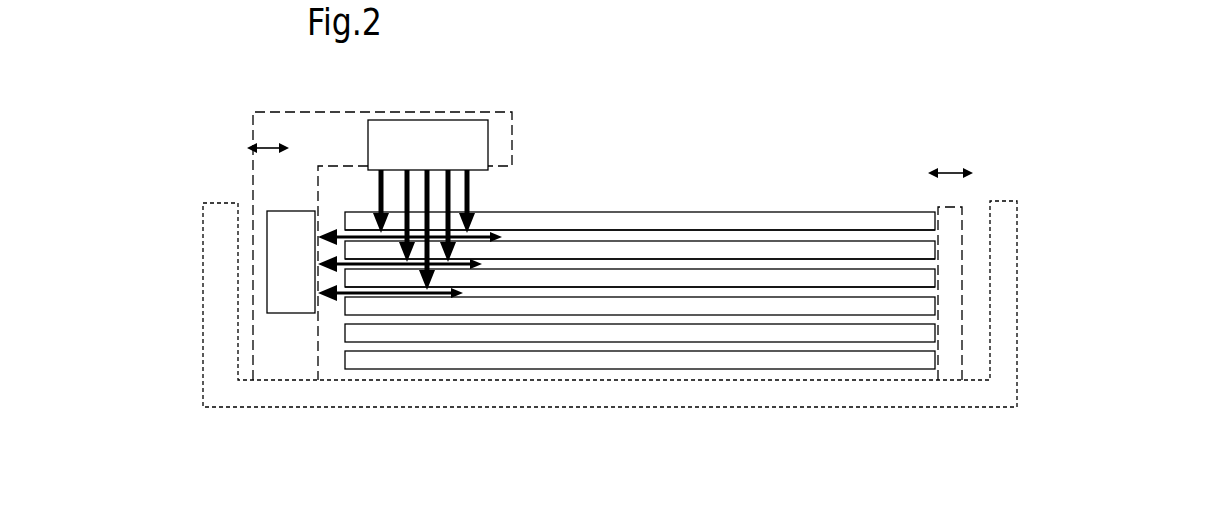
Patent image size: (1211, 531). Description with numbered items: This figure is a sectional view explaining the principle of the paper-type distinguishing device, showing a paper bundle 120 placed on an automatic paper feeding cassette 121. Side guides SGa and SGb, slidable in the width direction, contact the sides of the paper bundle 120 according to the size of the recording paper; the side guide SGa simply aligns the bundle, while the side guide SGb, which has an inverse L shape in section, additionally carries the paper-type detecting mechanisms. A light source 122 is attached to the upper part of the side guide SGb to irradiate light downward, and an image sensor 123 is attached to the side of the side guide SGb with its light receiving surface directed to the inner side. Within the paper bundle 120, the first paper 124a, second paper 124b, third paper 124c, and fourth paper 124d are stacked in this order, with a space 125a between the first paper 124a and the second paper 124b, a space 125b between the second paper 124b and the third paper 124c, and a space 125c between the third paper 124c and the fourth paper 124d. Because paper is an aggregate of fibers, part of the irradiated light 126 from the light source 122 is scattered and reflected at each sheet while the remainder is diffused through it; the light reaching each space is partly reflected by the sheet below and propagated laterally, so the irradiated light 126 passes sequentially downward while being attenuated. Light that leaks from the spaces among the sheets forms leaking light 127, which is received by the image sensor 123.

The paper bundle 120 is at (866, 206).
The automatic paper feeding cassette 121 is at (387, 439).
The light source 122 is at (460, 125).
The image sensor 123 is at (292, 313).
The first paper 124a is at (510, 215).
The second paper 124b is at (545, 250).
The third paper 124c is at (625, 277).
The fourth paper 124d is at (652, 308).
The space 125a is at (782, 233).
The space 125b is at (725, 265).
The space 125c is at (697, 292).
The irradiated light 126 is at (470, 190).
The leaking light 127 is at (390, 296).
The side guide SGa is at (947, 220).
The side guide SGb is at (268, 180).